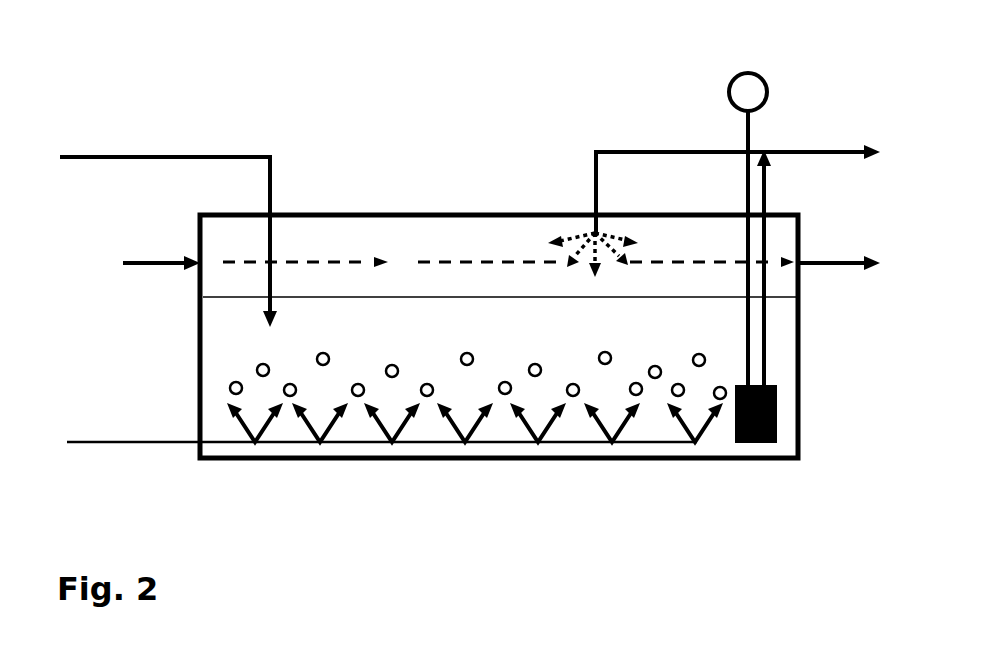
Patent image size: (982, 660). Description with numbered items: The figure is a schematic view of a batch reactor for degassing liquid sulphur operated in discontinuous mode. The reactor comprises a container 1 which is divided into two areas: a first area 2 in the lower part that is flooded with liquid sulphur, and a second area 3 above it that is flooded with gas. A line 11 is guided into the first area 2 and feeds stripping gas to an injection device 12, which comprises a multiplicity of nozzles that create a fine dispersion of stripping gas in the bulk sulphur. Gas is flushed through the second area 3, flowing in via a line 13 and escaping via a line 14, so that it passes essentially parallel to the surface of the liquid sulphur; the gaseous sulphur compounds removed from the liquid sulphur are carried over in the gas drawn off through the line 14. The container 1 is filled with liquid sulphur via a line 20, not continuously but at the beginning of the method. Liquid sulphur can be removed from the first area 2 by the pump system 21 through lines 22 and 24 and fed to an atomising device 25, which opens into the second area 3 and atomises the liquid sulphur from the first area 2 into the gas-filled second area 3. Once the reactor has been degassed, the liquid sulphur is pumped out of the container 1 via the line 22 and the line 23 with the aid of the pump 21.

The container 1 is at (388, 213).
The first area 2 is at (242, 353).
The second area 3 is at (453, 255).
The line 11 is at (130, 444).
The injection device 12 is at (463, 444).
The line 13 is at (150, 261).
The line 14 is at (835, 261).
The line 20 is at (220, 155).
The pump system 21 is at (777, 411).
The line 22 is at (766, 362).
The line 23 is at (828, 150).
The line 24 is at (615, 150).
The atomising device 25 is at (593, 231).